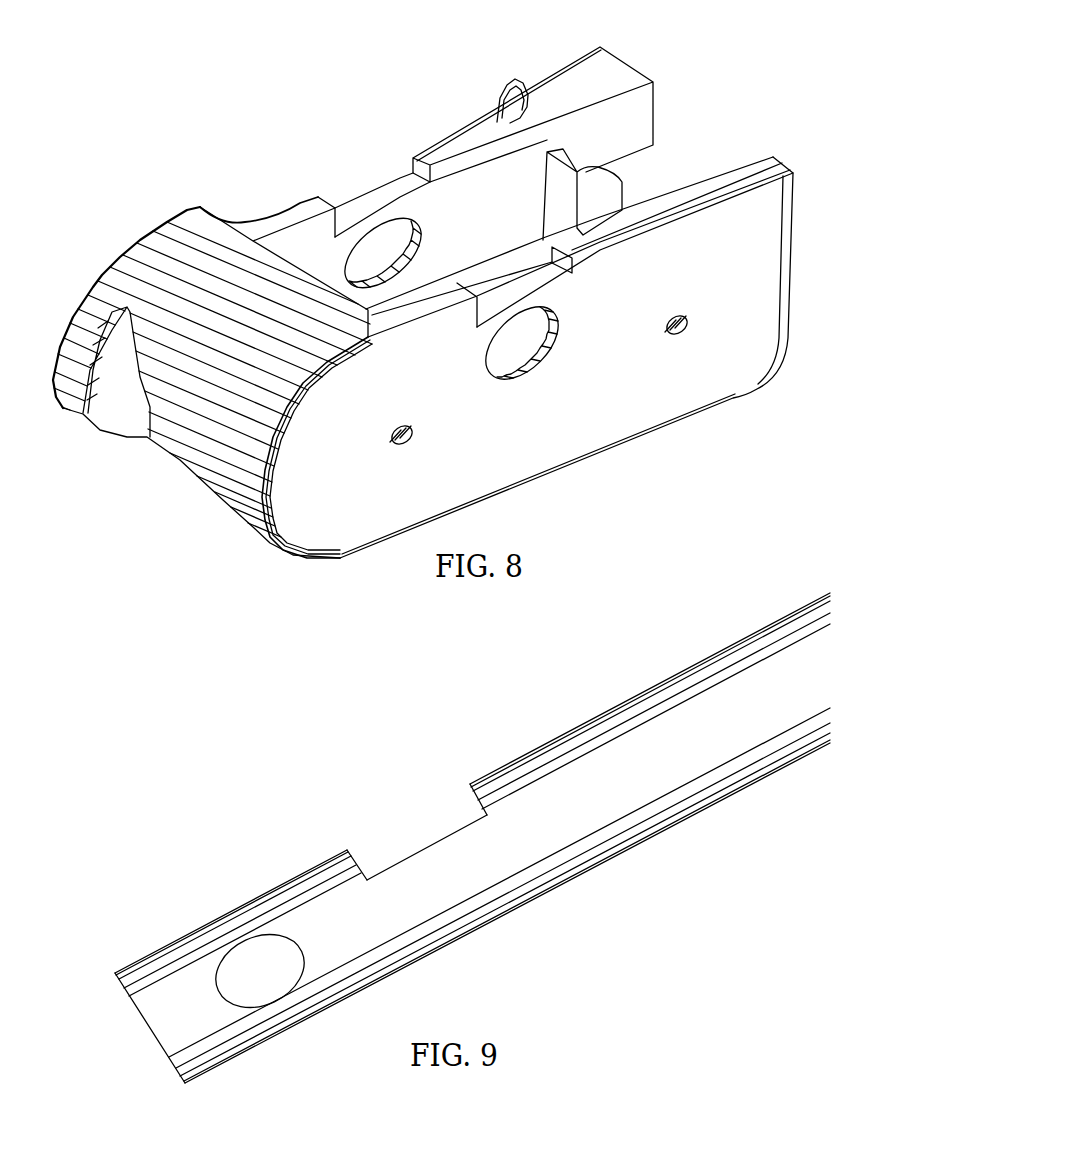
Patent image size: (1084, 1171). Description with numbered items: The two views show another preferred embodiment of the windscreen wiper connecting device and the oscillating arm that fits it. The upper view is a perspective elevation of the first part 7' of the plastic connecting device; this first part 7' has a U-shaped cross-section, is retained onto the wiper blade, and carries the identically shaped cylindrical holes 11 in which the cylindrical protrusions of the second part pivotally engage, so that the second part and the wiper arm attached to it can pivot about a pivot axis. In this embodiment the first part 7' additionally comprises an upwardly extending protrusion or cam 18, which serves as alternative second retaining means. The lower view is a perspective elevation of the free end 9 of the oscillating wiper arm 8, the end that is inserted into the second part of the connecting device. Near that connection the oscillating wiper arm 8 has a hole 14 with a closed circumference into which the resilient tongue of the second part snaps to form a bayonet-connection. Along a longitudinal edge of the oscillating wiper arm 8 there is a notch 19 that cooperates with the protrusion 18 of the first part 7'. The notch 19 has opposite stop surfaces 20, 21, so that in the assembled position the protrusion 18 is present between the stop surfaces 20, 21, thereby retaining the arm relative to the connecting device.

In FIG. 8, the first part 7' is at (212, 330).
In FIG. 8, the cylindrical holes 11 is at (347, 218).
In FIG. 8, the protrusion or cam 18 is at (603, 195).
In FIG. 9, the oscillating wiper arm 8 is at (710, 752).
In FIG. 9, the free end 9 is at (167, 1022).
In FIG. 9, the hole 14 is at (253, 960).
In FIG. 9, the notch 19 is at (410, 843).
In FIG. 9, the stop surface 20 is at (365, 875).
In FIG. 9, the stop surface 21 is at (448, 798).